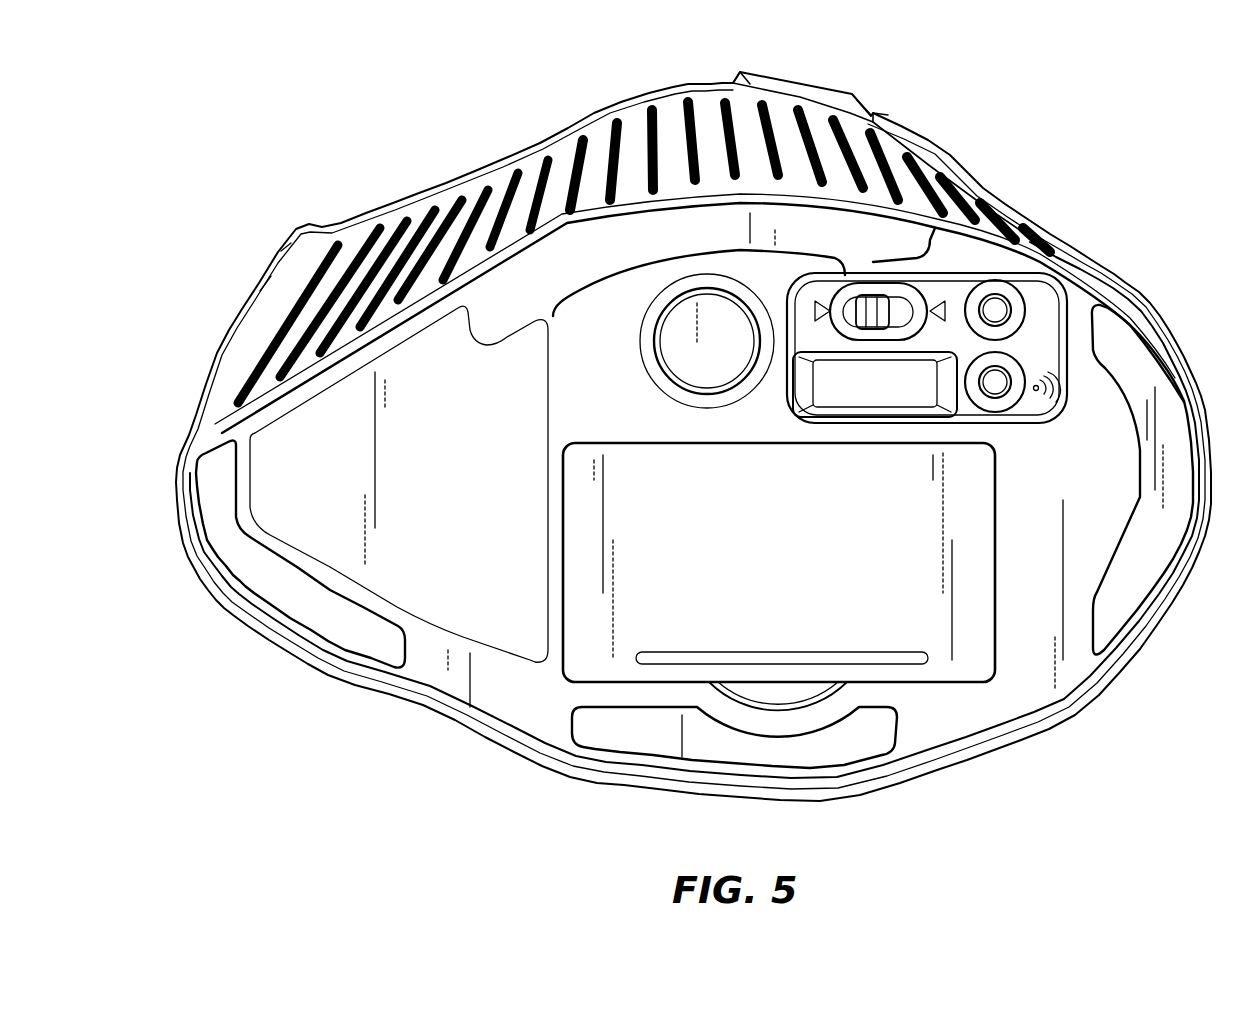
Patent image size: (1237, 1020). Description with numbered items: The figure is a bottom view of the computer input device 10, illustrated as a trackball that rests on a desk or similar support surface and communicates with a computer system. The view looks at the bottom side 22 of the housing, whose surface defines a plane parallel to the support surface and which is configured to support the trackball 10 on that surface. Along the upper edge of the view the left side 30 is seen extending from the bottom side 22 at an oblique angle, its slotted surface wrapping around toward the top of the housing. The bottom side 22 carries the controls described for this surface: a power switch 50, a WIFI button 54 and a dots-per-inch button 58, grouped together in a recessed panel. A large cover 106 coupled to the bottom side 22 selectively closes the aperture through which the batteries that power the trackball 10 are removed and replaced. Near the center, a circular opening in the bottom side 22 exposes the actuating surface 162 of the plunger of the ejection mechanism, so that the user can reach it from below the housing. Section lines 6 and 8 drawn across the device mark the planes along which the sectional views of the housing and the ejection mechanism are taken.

The computer input device 10 is at (1063, 136).
The bottom side 22 is at (517, 700).
The left side 30 is at (635, 145).
The power switch 50 is at (893, 300).
The WIFI button 54 is at (1003, 377).
The DPI button 58 is at (1000, 293).
The cover 106 is at (970, 613).
The actuating surface 162 is at (683, 295).
The section line 6- 6 is at (706, 42).
The section line 8- 8 is at (588, 315).